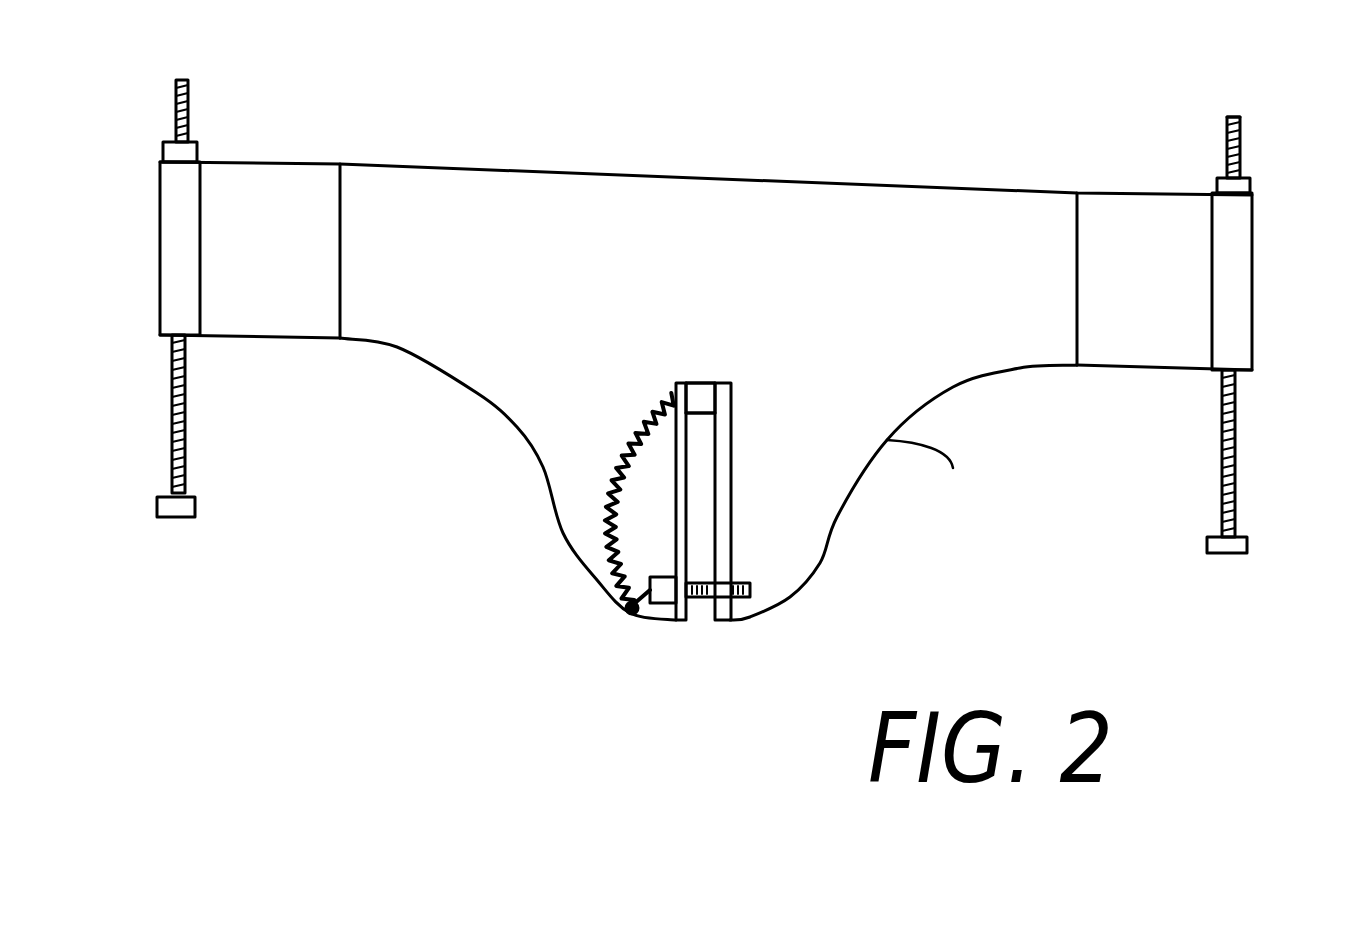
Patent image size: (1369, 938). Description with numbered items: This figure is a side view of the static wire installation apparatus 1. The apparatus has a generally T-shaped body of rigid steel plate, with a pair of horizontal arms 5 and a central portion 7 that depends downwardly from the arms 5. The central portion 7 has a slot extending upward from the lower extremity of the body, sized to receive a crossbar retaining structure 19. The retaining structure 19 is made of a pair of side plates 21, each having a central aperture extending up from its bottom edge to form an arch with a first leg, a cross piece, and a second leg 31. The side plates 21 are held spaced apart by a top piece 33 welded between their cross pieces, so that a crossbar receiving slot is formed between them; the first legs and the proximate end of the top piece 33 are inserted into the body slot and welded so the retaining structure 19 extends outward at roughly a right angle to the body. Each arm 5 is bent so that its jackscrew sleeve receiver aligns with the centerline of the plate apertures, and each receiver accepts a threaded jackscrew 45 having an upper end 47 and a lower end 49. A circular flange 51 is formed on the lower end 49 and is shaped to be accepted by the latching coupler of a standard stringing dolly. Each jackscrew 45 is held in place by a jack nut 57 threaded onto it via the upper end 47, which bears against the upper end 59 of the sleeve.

The static wire installation apparatus 1 is at (422, 502).
The horizontal arms 5 is at (293, 163).
The central portion 7 is at (924, 474).
The crossbar retaining structure 19 is at (737, 524).
The side plates 21 is at (733, 487).
The second leg 31 is at (172, 342).
The top piece 33 is at (703, 383).
The threaded jackscrew 45 is at (187, 100).
The upper end 47 is at (1232, 117).
The lower end 49 is at (1164, 471).
The circular flange 51 is at (195, 507).
The jack nut 57 is at (198, 152).
The upper end 59 is at (163, 160).